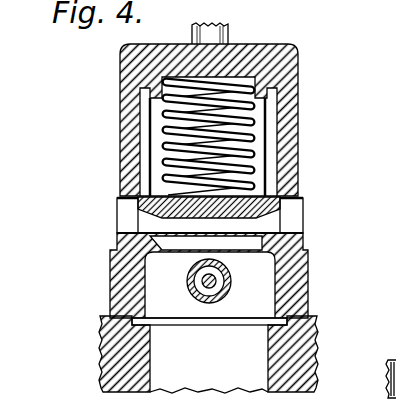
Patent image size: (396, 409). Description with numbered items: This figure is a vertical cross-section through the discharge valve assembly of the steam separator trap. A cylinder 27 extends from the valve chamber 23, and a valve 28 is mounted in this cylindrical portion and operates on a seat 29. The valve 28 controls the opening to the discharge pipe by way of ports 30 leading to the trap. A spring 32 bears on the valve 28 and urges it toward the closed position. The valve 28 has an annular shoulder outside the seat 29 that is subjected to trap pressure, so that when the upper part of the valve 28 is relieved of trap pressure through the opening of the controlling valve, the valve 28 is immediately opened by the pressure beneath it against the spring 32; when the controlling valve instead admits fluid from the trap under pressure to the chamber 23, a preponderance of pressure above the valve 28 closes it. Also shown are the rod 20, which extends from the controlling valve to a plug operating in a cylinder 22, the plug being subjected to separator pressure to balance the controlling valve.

The rod 20 is at (228, 285).
The cylinder 22 is at (230, 272).
The valve chamber 23 is at (253, 121).
The cylinder 27 is at (298, 96).
The valve 28 is at (298, 181).
The seat 29 is at (192, 236).
The ports 30 is at (333, 240).
The spring 32 is at (248, 147).